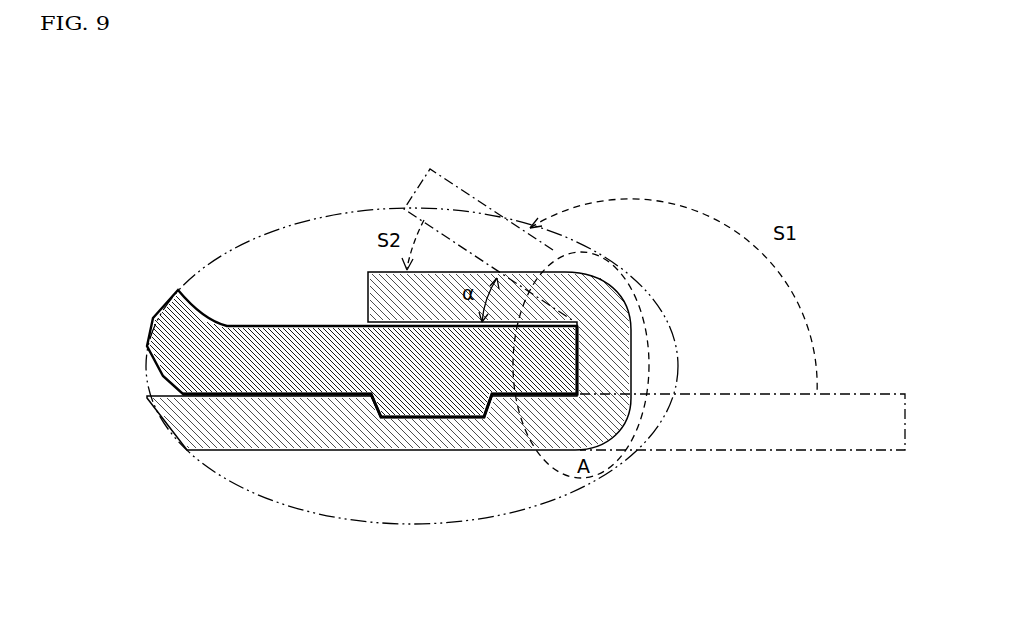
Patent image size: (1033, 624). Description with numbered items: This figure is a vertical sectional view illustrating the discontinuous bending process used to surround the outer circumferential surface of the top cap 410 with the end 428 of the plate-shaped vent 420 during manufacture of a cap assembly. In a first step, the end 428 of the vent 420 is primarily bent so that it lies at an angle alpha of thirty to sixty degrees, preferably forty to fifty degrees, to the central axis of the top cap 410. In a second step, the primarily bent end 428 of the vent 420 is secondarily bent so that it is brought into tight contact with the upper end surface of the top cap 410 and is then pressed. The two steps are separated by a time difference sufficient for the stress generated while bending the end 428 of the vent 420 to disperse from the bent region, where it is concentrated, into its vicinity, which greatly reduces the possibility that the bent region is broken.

The top cap 410 is at (167, 317).
The plate-shaped vent 420 is at (213, 432).
The end of the vent 428 is at (450, 197).